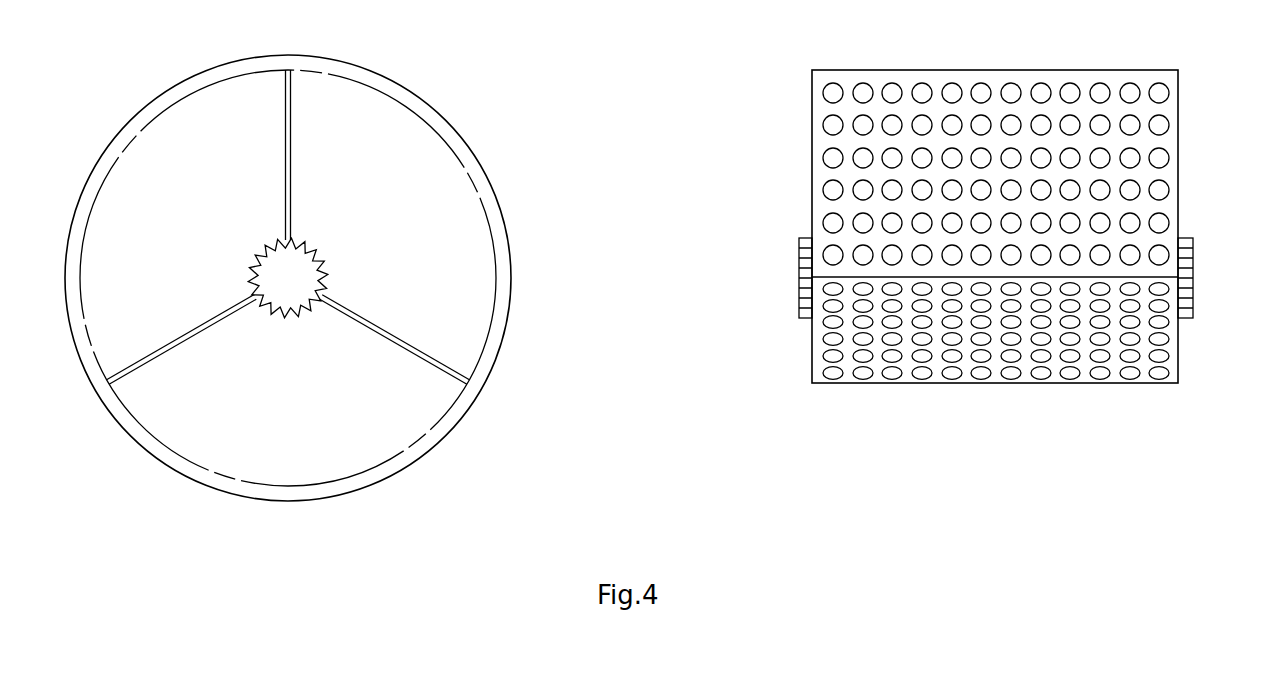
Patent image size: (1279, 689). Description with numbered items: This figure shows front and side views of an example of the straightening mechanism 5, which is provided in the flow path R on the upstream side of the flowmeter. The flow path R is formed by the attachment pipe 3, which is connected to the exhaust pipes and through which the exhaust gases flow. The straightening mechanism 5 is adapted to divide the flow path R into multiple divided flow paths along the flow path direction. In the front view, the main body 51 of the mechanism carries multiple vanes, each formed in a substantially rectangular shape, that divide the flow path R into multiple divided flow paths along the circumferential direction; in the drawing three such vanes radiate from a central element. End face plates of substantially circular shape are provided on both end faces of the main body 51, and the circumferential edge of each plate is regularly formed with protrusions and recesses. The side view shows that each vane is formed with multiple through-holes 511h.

The straightening mechanism 5 is at (288, 296).
The attachment pipe 3 is at (427, 452).
The flow path R is at (300, 456).
The main body 51 is at (288, 227).
The through-holes 511h is at (921, 83).